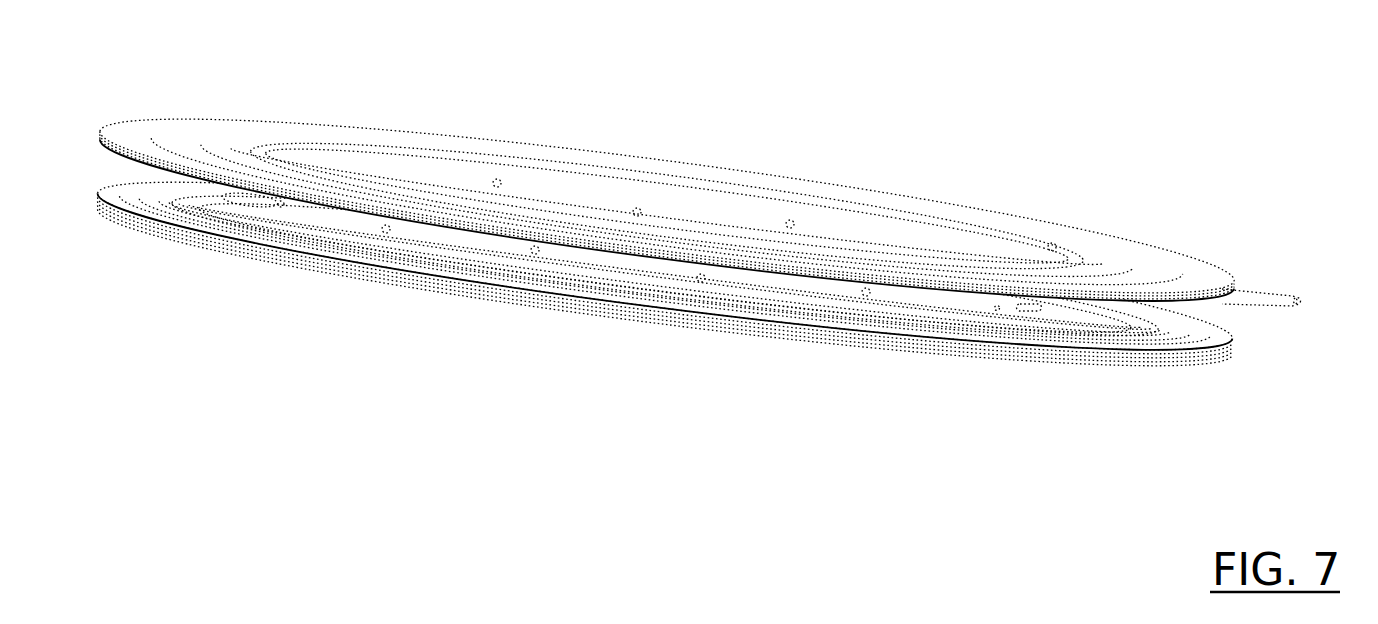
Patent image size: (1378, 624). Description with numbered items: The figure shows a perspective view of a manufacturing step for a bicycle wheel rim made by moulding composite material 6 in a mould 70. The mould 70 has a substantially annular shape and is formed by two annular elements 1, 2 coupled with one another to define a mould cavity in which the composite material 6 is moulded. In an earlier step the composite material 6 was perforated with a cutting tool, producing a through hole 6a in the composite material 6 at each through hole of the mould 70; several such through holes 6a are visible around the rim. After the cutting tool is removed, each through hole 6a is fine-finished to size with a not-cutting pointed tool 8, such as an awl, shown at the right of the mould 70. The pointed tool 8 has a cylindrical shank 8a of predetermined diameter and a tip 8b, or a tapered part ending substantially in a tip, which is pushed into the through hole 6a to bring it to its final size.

The mould 70 is at (720, 265).
The annular element 2 is at (226, 125).
The annular element 1 is at (170, 234).
The composite material 6 is at (1112, 325).
The through hole 6a is at (387, 232).
The pointed tool 8 is at (1280, 298).
The cylindrical shank 8a is at (1262, 307).
The tip 8b is at (1038, 307).